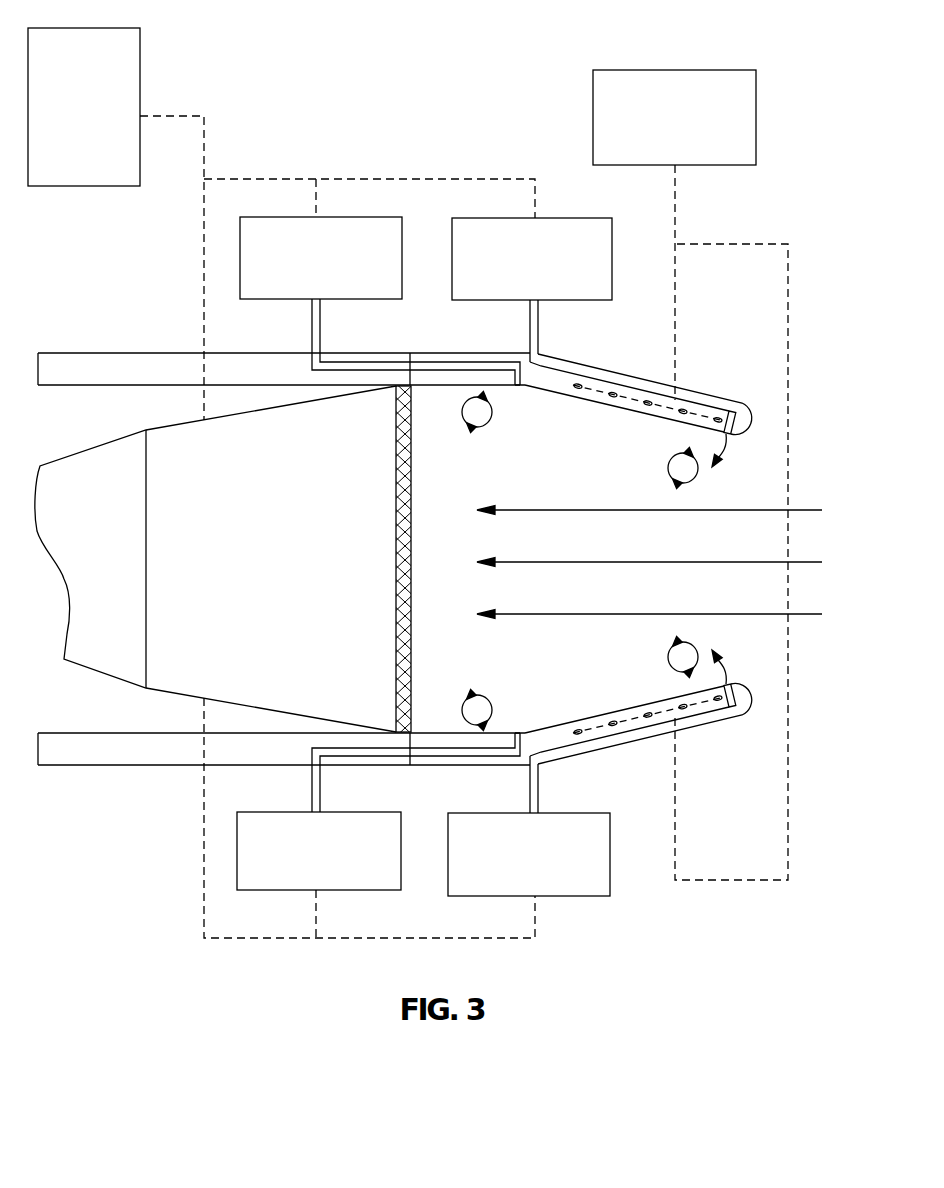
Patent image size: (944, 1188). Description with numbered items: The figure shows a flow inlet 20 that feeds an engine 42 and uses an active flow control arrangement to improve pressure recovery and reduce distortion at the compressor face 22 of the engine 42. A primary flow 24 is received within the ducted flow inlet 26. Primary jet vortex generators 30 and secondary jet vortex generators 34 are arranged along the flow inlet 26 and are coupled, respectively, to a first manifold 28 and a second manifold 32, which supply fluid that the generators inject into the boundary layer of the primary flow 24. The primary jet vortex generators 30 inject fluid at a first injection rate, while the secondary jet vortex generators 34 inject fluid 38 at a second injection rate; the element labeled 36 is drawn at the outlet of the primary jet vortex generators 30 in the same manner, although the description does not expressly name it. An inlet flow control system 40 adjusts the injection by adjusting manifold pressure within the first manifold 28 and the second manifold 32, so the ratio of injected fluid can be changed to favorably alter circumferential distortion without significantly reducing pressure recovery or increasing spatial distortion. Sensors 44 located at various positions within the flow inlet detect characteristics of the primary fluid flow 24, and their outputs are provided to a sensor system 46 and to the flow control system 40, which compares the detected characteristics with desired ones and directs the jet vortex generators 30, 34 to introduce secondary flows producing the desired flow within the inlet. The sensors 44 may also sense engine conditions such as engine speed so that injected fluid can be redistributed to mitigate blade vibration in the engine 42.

The flow inlet 20 is at (800, 47).
The compressor face 22 is at (410, 507).
The primary flow 24 is at (815, 500).
The ducted flow inlet 26 is at (708, 392).
The first manifold 28 is at (521, 281).
The primary jet vortex generator 30 is at (731, 434).
The second manifold 32 is at (310, 294).
The secondary jet vortex generator 34 is at (523, 388).
The first jet flow 36 is at (720, 462).
The fluid 38 is at (510, 415).
The inlet flow control system 40 is at (73, 156).
The engine 42 is at (215, 559).
The sensors 44 is at (633, 558).
The sensor system 46 is at (664, 141).